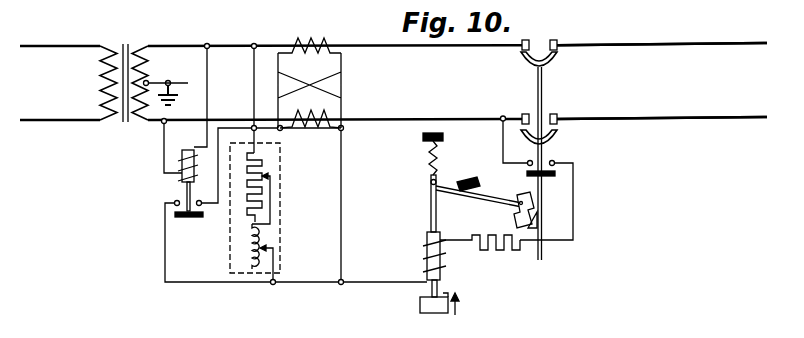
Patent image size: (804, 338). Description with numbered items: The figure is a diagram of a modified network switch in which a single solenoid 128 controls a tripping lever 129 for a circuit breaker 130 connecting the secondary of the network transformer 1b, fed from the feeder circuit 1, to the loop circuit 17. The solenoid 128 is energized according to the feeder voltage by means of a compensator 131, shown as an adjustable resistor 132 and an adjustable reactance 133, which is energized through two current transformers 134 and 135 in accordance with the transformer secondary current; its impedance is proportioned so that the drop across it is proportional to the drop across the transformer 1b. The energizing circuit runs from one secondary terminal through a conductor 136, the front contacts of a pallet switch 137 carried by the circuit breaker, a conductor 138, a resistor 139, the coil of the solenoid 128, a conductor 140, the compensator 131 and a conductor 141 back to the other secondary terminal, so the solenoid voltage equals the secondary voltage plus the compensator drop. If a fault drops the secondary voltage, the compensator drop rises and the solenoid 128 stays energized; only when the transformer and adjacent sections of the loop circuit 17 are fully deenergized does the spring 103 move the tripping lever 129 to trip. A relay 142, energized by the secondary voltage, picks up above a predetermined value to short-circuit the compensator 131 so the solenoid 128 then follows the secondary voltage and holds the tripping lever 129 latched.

The feeder circuit 1 is at (56, 30).
The network transformer 1b is at (134, 34).
The conductor 141 is at (252, 85).
The relay 142 is at (177, 174).
The current transformer 134 is at (294, 39).
The current transformer 135 is at (327, 112).
The compensator 131 is at (314, 200).
The adjustable resistor 132 is at (263, 167).
The adjustable reactance 133 is at (261, 238).
The conductor 140 is at (376, 284).
The circuit breaker 130 is at (543, 83).
The conductor 136 is at (503, 137).
The pallet switch 137 is at (552, 177).
The conductor 138 is at (574, 213).
The resistor 139 is at (492, 250).
The solenoid 128 is at (427, 239).
The spring 103 is at (431, 158).
The tripping lever 129 is at (523, 199).
The loop circuit 17 is at (658, 116).